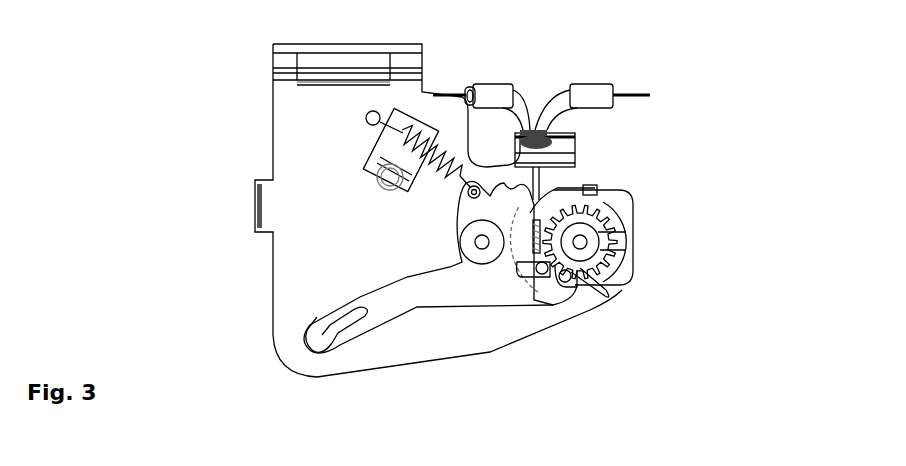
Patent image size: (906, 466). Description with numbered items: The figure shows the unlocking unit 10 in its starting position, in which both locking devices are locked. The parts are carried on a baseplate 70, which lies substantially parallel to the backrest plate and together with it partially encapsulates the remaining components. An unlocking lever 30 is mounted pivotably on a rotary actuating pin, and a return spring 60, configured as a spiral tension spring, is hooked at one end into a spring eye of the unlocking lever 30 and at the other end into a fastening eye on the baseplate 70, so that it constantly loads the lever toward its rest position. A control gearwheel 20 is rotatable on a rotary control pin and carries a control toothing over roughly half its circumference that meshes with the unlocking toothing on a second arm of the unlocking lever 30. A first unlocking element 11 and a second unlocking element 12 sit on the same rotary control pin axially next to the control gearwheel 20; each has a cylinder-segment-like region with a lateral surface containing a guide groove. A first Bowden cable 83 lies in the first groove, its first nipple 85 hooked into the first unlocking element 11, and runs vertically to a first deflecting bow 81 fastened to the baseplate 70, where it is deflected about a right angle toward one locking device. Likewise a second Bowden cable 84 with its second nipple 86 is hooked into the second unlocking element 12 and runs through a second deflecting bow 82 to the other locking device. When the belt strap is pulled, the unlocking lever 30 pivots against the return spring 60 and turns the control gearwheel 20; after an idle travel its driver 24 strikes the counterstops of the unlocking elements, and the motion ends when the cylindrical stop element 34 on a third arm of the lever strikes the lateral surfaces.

The unlocking unit 10 is at (186, 101).
The first unlocking element 11 is at (562, 193).
The second unlocking element 12 is at (557, 197).
The control gearwheel 20 is at (597, 213).
The driver 24 is at (610, 257).
The unlocking lever 30 is at (407, 290).
The stop element 34 is at (568, 275).
The return spring 60 is at (402, 148).
The baseplate 70 is at (288, 268).
The first deflecting bow 81 is at (507, 93).
The second deflecting bow 82 is at (572, 93).
The first Bowden cable 83 is at (458, 93).
The second Bowden cable 84 is at (628, 93).
The first nipple 85 is at (548, 271).
The second nipple 86 is at (543, 273).